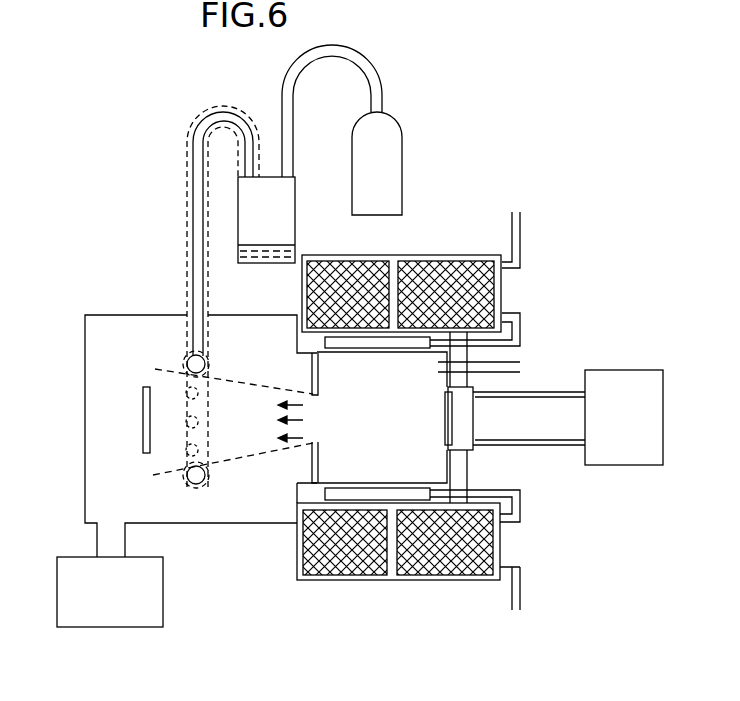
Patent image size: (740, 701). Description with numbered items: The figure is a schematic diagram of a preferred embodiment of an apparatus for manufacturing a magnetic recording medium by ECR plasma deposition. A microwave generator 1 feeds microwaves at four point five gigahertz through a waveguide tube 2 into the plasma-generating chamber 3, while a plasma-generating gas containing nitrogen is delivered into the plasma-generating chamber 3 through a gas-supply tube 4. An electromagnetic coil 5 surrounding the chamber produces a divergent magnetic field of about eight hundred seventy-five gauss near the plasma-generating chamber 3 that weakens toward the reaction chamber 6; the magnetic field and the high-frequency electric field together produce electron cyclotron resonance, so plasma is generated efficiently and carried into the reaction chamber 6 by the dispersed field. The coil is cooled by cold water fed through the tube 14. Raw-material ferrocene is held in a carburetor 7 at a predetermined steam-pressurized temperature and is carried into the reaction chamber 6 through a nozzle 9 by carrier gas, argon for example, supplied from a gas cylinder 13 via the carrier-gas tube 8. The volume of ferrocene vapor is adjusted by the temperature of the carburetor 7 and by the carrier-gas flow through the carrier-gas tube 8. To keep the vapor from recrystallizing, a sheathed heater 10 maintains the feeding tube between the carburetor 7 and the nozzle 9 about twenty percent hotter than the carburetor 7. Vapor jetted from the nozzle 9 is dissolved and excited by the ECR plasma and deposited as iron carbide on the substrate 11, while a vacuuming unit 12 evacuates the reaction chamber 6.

The microwave generator 1 is at (634, 429).
The waveguide tube 2 is at (556, 391).
The plasma-generating chamber 3 is at (384, 428).
The gas-supply tube 4 is at (520, 360).
The electromagnetic coil 5 is at (342, 580).
The reaction chamber 6 is at (245, 429).
The carburetor 7 is at (237, 231).
The carrier-gas tube 8 is at (375, 68).
The nozzle 9 is at (200, 490).
The sheathed heater 10 is at (213, 109).
The substrate 11 is at (160, 397).
The vacuuming unit 12 is at (122, 606).
The gas cylinder 13 is at (402, 134).
The cooling water tube 14 is at (522, 232).